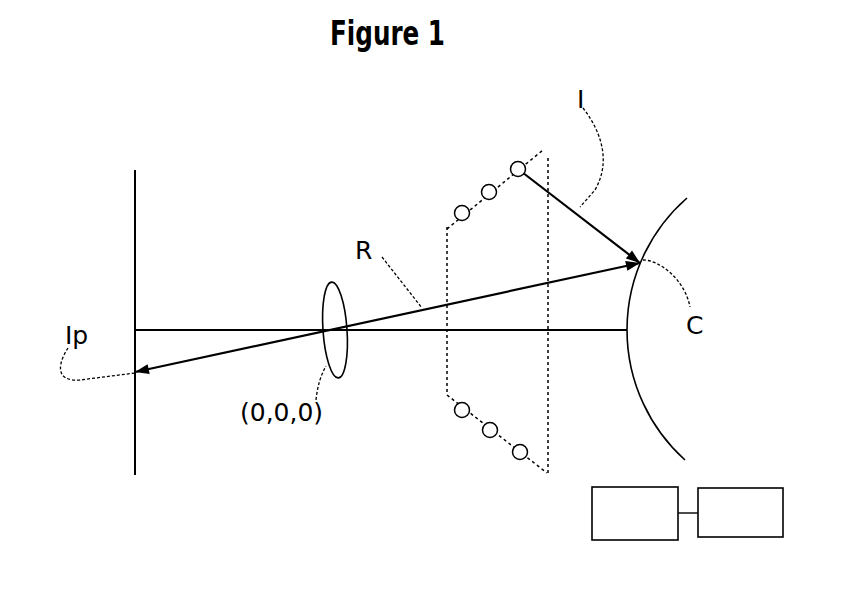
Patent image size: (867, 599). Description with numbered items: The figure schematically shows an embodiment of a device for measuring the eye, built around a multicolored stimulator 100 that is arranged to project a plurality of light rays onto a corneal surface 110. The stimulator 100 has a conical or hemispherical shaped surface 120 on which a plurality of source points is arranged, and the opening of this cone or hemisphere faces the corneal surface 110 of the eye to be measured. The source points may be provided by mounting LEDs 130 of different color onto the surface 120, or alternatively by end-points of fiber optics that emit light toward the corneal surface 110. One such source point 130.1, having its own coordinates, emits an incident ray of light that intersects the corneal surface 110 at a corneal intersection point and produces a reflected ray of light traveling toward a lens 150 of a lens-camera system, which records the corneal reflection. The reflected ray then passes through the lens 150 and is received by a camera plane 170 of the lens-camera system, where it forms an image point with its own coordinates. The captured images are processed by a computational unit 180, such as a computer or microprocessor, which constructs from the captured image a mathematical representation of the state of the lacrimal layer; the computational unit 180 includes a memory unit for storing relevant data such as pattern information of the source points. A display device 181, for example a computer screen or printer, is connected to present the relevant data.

The multicolored stimulator 100 is at (462, 177).
The corneal surface 110 is at (663, 221).
The conical or hemispherical shaped surface 120 is at (543, 150).
The LEDs 130 is at (487, 437).
The source point 130.1 is at (511, 169).
The lens 150 is at (327, 300).
The camera plane 170 is at (135, 452).
The computational unit 180 is at (592, 492).
The display device 181 is at (723, 538).